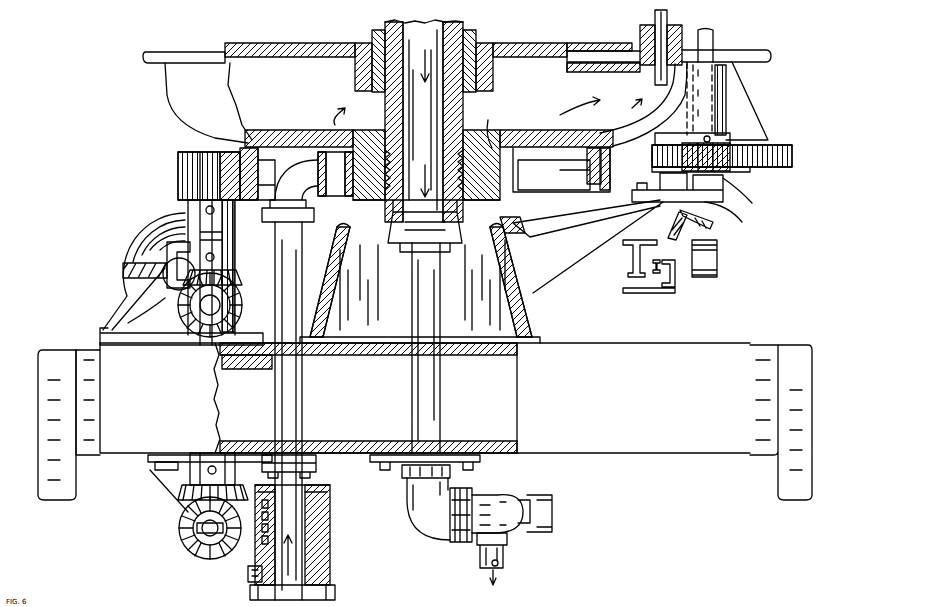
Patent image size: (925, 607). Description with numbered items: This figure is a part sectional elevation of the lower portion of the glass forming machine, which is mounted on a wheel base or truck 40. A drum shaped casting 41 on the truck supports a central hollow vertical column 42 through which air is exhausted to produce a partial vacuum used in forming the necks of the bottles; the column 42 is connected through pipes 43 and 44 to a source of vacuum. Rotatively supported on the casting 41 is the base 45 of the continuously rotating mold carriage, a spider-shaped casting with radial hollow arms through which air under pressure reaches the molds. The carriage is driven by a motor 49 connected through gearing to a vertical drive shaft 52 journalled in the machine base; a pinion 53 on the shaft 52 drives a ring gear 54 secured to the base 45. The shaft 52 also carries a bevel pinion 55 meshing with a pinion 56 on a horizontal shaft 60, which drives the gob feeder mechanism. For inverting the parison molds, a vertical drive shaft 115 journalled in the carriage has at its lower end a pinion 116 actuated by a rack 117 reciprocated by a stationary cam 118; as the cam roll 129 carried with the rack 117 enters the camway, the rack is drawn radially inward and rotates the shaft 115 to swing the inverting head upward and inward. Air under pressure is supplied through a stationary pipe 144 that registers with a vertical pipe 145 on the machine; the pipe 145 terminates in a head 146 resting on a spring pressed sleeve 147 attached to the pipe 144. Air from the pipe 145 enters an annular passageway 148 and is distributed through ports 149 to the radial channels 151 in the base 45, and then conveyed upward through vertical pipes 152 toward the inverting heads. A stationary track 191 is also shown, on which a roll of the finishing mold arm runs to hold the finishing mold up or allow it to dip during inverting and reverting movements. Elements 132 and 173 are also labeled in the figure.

The wheel base or truck 40 is at (661, 450).
The drum shaped casting 41 is at (528, 310).
The central hollow vertical column 42 is at (463, 30).
The pipe 43 is at (440, 400).
The pipe 44 is at (505, 548).
The base 45 is at (173, 96).
The motor 49 is at (140, 240).
The vertical drive shaft 52 is at (200, 345).
The pinion 53 is at (178, 176).
The ring gear 54 is at (228, 142).
The bevel pinion 55 is at (190, 505).
The pinion 56 is at (178, 535).
The horizontal shaft 60 is at (198, 546).
The vertical drive shaft 115 is at (713, 45).
The pinion 116 is at (735, 165).
The rack 117 is at (755, 145).
The stationary cam 118 is at (742, 222).
The cam roll 129 is at (753, 195).
The element 132 is at (393, 599).
The stationary pipe 144 is at (265, 585).
The vertical pipe 145 is at (302, 400).
The head 146 is at (318, 470).
The spring pressed sleeve 147 is at (330, 512).
The annular passageway 148 is at (512, 206).
The ports 149 is at (488, 120).
The radial channels 151 is at (439, 104).
The vertical pipes 152 is at (667, 20).
The element 173 is at (451, 599).
The stationary track 191 is at (668, 218).